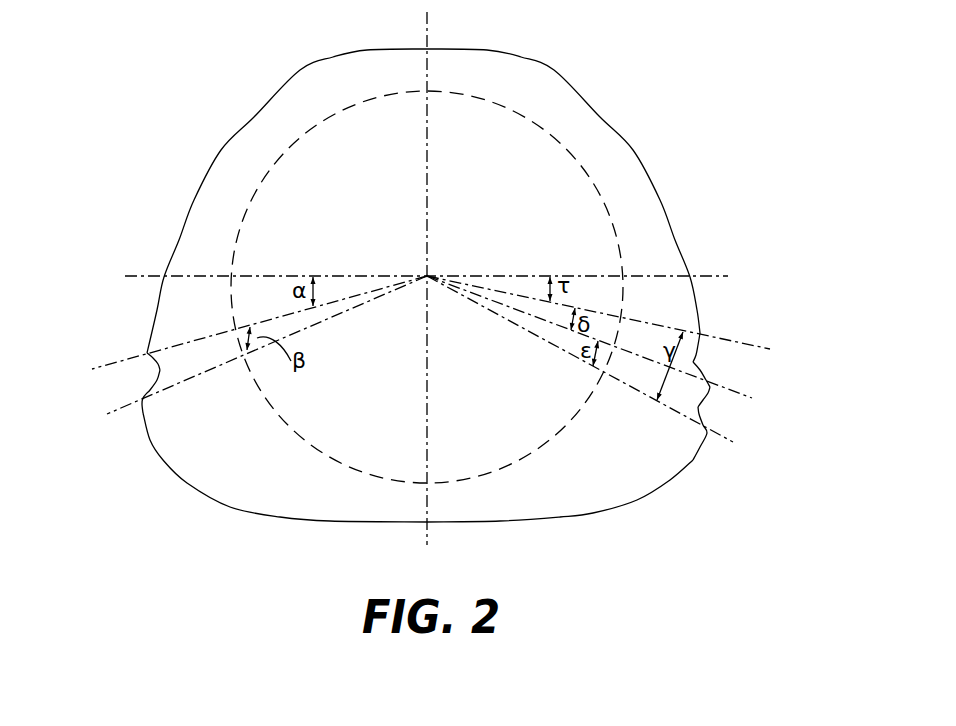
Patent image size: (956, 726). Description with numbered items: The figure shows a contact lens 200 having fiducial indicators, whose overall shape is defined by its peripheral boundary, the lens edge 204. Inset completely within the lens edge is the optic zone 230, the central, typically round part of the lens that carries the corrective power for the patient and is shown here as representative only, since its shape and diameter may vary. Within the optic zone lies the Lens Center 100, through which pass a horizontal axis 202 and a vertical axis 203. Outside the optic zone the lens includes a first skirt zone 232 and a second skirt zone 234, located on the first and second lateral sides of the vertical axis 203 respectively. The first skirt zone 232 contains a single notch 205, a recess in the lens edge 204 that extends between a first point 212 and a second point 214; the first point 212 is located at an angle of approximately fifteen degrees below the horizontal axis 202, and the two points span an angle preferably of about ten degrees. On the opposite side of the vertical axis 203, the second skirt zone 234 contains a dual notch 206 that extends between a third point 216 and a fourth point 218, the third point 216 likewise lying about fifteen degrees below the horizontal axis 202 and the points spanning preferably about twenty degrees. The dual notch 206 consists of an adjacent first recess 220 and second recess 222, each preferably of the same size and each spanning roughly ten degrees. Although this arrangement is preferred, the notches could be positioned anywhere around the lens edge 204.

The Lens Center 100 is at (427, 276).
The contact lens 200 is at (715, 188).
The horizontal axis 202 is at (713, 276).
The vertical axis 203 is at (427, 28).
The lens edge 204 is at (633, 152).
The single notch 205 is at (88, 388).
The dual notch 206 is at (770, 403).
The first point 212 is at (146, 352).
The second point 214 is at (143, 400).
The third point 216 is at (705, 343).
The fourth point 218 is at (707, 433).
The first recess 220 is at (695, 363).
The second recess 222 is at (700, 407).
The optic zone 230 is at (538, 123).
The first skirt zone 232 is at (195, 465).
The second skirt zone 234 is at (660, 465).